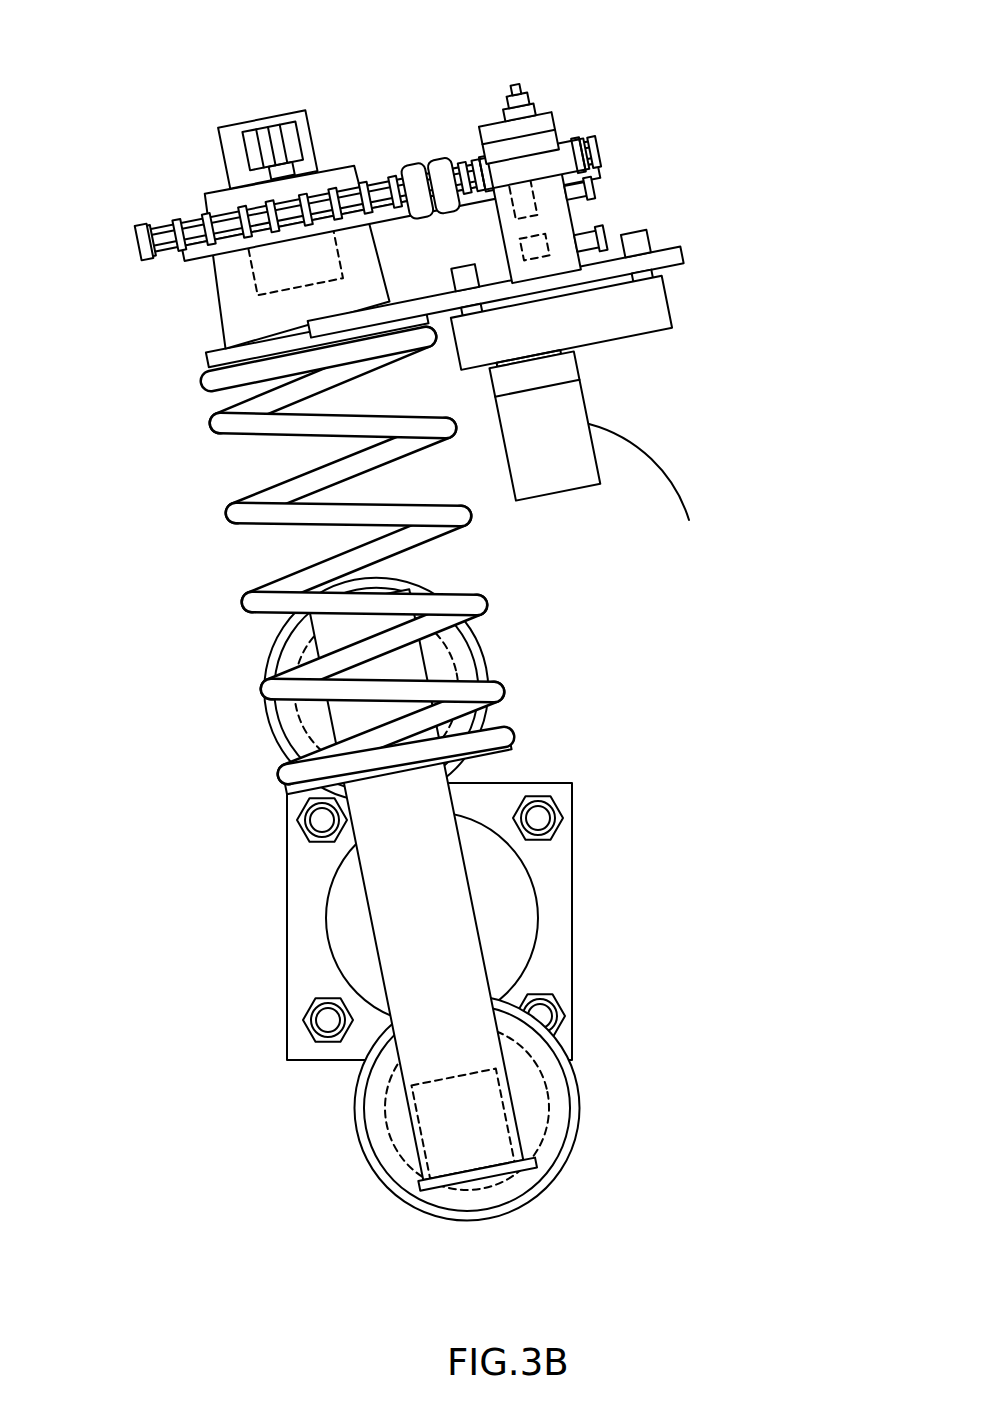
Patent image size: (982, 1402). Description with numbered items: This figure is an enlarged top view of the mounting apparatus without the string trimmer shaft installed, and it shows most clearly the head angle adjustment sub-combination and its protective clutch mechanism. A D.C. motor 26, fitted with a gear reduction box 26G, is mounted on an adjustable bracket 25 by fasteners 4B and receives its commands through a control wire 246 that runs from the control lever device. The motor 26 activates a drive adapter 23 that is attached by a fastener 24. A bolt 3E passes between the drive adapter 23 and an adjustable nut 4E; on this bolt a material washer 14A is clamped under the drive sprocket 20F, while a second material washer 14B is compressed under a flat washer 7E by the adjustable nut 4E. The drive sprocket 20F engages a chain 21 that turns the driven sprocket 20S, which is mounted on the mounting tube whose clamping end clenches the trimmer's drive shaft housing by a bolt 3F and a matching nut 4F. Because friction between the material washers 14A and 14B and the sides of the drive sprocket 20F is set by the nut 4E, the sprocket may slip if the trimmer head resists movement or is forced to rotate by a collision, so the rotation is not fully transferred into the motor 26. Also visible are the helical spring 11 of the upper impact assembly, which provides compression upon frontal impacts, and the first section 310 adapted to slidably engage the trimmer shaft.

The bolt 3F is at (274, 95).
The matching nut 4F is at (287, 120).
The chain 21 is at (439, 140).
The driven sprocket 20S is at (110, 207).
The drive sprocket 20F is at (463, 186).
The material washer 14A is at (583, 163).
The material washer 14B is at (553, 128).
The flat washer 7E is at (614, 87).
The adjustable nut 4E is at (537, 102).
The bolt 3E is at (545, 63).
The fastener 24 is at (573, 193).
The drive adapter 23 is at (580, 217).
The fasteners 4B is at (715, 222).
The adjustable bracket 25 is at (677, 252).
The gear reduction box 26G is at (667, 305).
The D.C. motor 26 is at (587, 400).
The control wire 246 is at (660, 462).
The helical spring 11 is at (247, 510).
The first section 310 is at (392, 915).